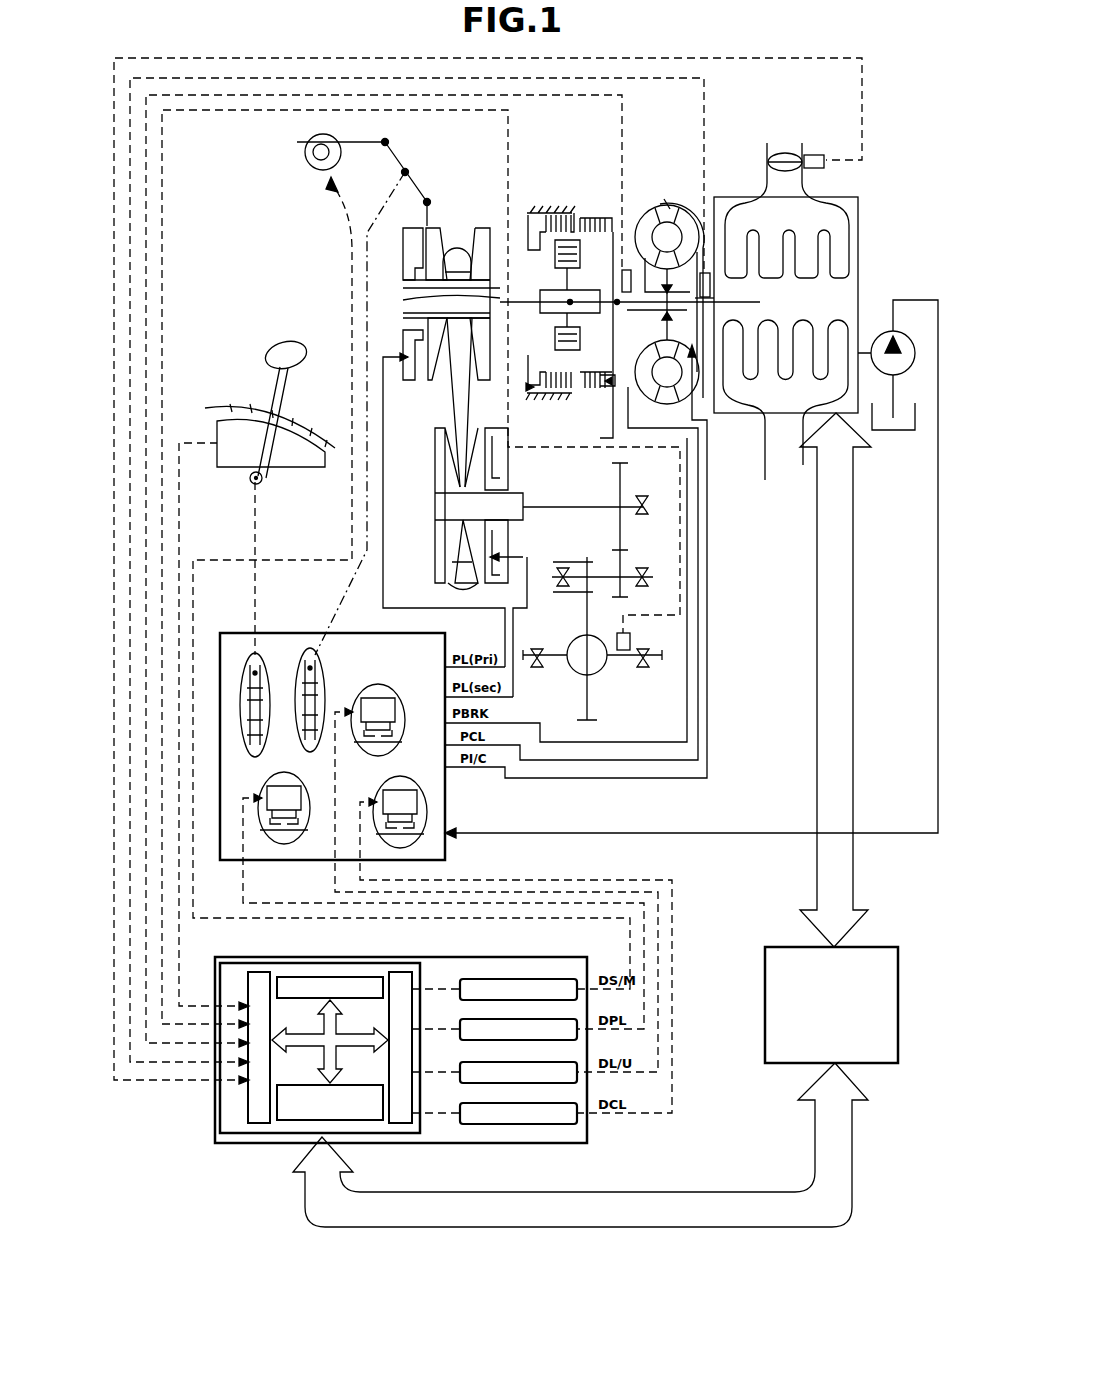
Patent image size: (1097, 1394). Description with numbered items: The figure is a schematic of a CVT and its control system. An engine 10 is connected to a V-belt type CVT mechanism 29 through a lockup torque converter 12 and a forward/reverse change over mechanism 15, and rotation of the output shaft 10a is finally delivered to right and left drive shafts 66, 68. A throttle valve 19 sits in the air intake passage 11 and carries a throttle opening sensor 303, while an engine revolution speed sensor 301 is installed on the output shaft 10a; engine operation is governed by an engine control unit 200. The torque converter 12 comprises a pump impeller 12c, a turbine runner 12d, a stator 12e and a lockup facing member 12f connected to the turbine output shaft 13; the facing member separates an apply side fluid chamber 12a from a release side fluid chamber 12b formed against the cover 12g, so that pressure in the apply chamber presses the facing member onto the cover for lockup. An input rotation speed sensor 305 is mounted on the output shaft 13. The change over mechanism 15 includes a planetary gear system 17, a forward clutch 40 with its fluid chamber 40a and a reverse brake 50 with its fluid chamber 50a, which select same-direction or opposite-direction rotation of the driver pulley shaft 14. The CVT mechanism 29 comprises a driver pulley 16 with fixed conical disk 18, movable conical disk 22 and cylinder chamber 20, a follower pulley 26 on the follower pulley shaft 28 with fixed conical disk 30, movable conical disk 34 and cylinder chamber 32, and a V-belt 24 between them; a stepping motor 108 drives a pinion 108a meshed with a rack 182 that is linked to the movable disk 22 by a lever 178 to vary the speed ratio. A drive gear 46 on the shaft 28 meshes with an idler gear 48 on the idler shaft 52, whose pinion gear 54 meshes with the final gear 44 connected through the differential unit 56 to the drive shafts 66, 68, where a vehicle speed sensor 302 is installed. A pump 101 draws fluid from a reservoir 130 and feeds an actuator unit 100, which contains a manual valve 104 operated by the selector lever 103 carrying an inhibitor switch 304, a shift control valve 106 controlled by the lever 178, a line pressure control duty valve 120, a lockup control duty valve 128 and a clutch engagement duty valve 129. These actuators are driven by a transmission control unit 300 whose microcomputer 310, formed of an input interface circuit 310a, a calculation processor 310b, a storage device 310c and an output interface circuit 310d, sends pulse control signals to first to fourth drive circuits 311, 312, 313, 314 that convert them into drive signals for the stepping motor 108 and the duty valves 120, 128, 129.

The engine 10 is at (800, 290).
The output shaft of the engine 10a is at (712, 300).
The air intake passage 11 is at (845, 243).
The torque converter 12 is at (731, 251).
The apply side fluid chamber 12a is at (698, 262).
The release side fluid chamber 12b is at (702, 317).
The pump impeller 12c is at (655, 207).
The turbine runner 12d is at (690, 216).
The stator 12e is at (650, 228).
The lockup facing member 12f is at (712, 300).
The cover 12g is at (672, 205).
The output shaft 13 is at (620, 305).
The driver pulley shaft 14 is at (403, 300).
The forward/reverse change over mechanism 15 is at (574, 272).
The driver pulley 16 is at (433, 313).
The planetary gear system 17 is at (573, 274).
The fixed conical disk 18 is at (490, 226).
The throttle valve 19 is at (786, 154).
The driver pulley cylinder chamber 20 is at (414, 380).
The movable conical disk 22 is at (428, 226).
The V-belt 24 is at (457, 258).
The follower pulley 26 is at (471, 525).
The follower pulley shaft 28 is at (586, 503).
The V-belt type CVT mechanism 29 is at (432, 440).
The fixed conical disk 30 is at (435, 510).
The follower pulley cylinder chamber 32 is at (508, 543).
The movable conical disk 34 is at (508, 486).
The forward clutch 40 is at (597, 220).
The fluid chamber 40a is at (598, 392).
The final gear 44 is at (590, 700).
The drive gear 46 is at (636, 490).
The idler gear 48 is at (634, 570).
The reverse brake 50 is at (566, 222).
The fluid chamber 50a is at (538, 395).
The idler shaft 52 is at (636, 590).
The pinion gear 54 is at (587, 560).
The differential unit 56 is at (574, 644).
The drive shaft 66 is at (545, 672).
The drive shaft 68 is at (656, 660).
The actuator unit 100 is at (367, 746).
The pump 101 is at (895, 334).
The selector lever 103 is at (270, 403).
The manual valve 104 is at (271, 685).
The shift control valve 106 is at (328, 679).
The stepping motor 108 is at (288, 170).
The pinion 108a is at (313, 153).
The line pressure control duty valve 120 is at (297, 797).
The lockup control duty valve 128 is at (380, 700).
The clutch engagement duty valve 129 is at (408, 804).
The reservoir 130 is at (900, 430).
The lever 178 is at (405, 158).
The rack 182 is at (365, 141).
The engine control unit 200 is at (898, 1031).
The transmission control unit 300 is at (432, 1049).
The engine revolution speed sensor 301 is at (712, 290).
The vehicle speed sensor 302 is at (632, 640).
The throttle opening sensor 303 is at (815, 155).
The inhibitor switch 304 is at (290, 462).
The input rotation speed sensor 305 is at (622, 284).
The microcomputer 310 is at (343, 1049).
The input interface circuit 310a is at (262, 1123).
The calculation processor 310b is at (358, 977).
The storage device 310c is at (370, 1120).
The output interface circuit 310d is at (406, 1123).
The first drive circuit 311 is at (540, 981).
The second drive circuit 312 is at (540, 1021).
The third drive circuit 313 is at (540, 1064).
The fourth drive circuit 314 is at (540, 1105).